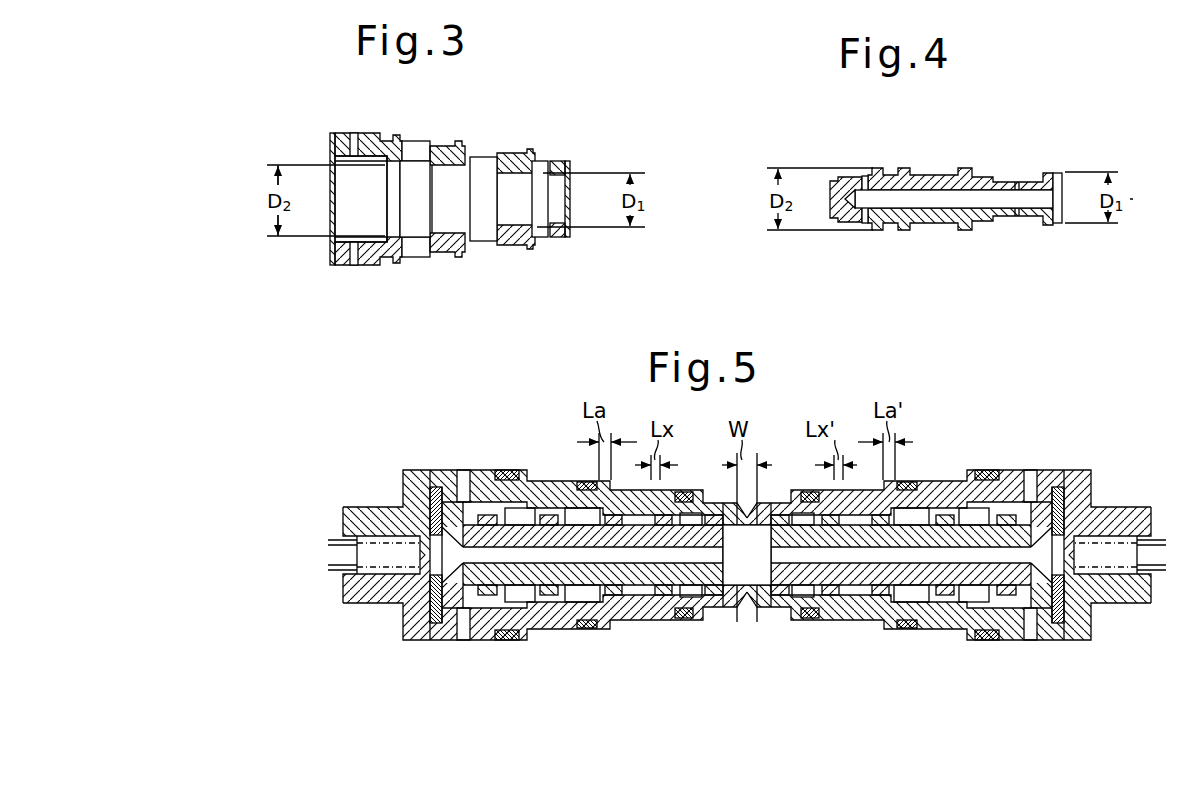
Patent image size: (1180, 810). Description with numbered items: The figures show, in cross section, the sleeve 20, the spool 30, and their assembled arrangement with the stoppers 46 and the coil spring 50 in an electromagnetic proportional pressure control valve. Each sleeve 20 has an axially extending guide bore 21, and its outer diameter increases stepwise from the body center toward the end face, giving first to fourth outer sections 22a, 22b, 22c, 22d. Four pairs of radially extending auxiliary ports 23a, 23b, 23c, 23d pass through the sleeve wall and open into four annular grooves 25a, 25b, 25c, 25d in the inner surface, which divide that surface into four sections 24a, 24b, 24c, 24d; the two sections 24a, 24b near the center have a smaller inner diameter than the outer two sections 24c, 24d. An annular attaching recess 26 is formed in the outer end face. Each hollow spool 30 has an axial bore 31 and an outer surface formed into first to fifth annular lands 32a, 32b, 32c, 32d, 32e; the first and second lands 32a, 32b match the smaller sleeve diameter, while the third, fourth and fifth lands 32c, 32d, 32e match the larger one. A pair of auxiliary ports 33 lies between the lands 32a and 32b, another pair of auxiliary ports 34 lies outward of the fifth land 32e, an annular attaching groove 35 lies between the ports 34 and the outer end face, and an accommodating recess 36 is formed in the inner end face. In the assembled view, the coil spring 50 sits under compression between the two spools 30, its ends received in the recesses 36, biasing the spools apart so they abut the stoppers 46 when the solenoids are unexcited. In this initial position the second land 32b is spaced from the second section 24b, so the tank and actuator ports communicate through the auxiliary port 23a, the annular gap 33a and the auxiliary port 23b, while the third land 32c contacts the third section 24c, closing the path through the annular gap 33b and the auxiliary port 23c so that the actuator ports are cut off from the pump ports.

In FIG. 3, the sleeve 20 is at (540, 150).
In FIG. 5, the sleeve 20 is at (481, 466).
In FIG. 3, the guide bore 21 is at (352, 194).
In FIG. 3, the first section of outer peripheral surface 22a is at (570, 158).
In FIG. 3, the second section of outer peripheral surface 22b is at (509, 153).
In FIG. 3, the third section of outer peripheral surface 22c is at (440, 147).
In FIG. 3, the fourth section of outer peripheral surface 22d is at (366, 135).
In FIG. 3, the auxiliary port 23a is at (540, 163).
In FIG. 3, the auxiliary port 23b is at (482, 160).
In FIG. 3, the auxiliary port 23c is at (416, 141).
In FIG. 3, the auxiliary port 23d is at (352, 136).
In FIG. 3, the first section of inner peripheral surface 24a is at (567, 240).
In FIG. 5, the first section of inner peripheral surface 24a is at (768, 596).
In FIG. 3, the second section of inner peripheral surface 24b is at (524, 244).
In FIG. 5, the second section of inner peripheral surface 24b is at (692, 600).
In FIG. 3, the third section of inner peripheral surface 24c is at (470, 246).
In FIG. 5, the third section of inner peripheral surface 24c is at (585, 605).
In FIG. 3, the fourth section of inner peripheral surface 24d is at (402, 243).
In FIG. 5, the fourth section of inner peripheral surface 24d is at (515, 605).
In FIG. 3, the annular groove 25a is at (545, 236).
In FIG. 3, the annular groove 25b is at (488, 236).
In FIG. 3, the annular groove 25c is at (440, 246).
In FIG. 3, the annular groove 25d is at (361, 243).
In FIG. 3, the annular attaching recess 26 is at (336, 247).
In FIG. 4, the spool 30 is at (1016, 166).
In FIG. 5, the spool 30 is at (544, 512).
In FIG. 4, the axial bore 31 is at (888, 200).
In FIG. 4, the first annular land 32a is at (1054, 173).
In FIG. 5, the first annular land 32a is at (722, 592).
In FIG. 4, the second annular land 32b is at (992, 177).
In FIG. 5, the second annular land 32b is at (652, 610).
In FIG. 4, the third annular land 32c is at (963, 168).
In FIG. 5, the third annular land 32c is at (614, 628).
In FIG. 4, the fourth annular land 32d is at (903, 168).
In FIG. 5, the fourth annular land 32d is at (549, 628).
In FIG. 4, the fifth annular land 32e is at (873, 167).
In FIG. 5, the fifth annular land 32e is at (485, 628).
In FIG. 4, the auxiliary port 33 is at (1017, 224).
In FIG. 5, the annular gap 33a is at (686, 478).
In FIG. 5, the annular gap 33b is at (805, 478).
In FIG. 4, the auxiliary port 34 is at (866, 224).
In FIG. 4, the annular attaching groove 35 is at (840, 223).
In FIG. 4, the accommodating recess 36 is at (1057, 200).
In FIG. 5, the stopper 46 is at (368, 518).
In FIG. 5, the coil spring 50 is at (737, 592).